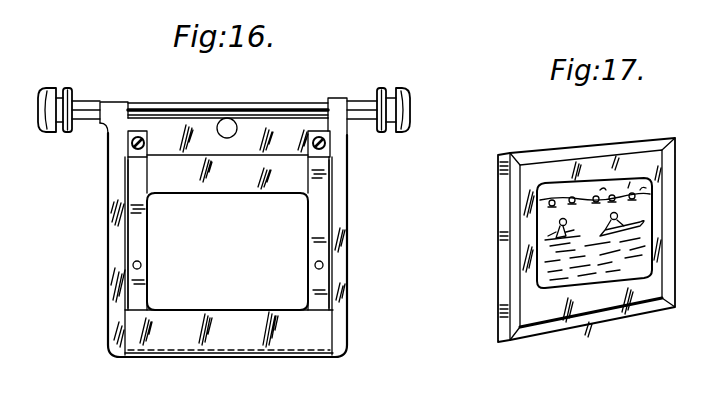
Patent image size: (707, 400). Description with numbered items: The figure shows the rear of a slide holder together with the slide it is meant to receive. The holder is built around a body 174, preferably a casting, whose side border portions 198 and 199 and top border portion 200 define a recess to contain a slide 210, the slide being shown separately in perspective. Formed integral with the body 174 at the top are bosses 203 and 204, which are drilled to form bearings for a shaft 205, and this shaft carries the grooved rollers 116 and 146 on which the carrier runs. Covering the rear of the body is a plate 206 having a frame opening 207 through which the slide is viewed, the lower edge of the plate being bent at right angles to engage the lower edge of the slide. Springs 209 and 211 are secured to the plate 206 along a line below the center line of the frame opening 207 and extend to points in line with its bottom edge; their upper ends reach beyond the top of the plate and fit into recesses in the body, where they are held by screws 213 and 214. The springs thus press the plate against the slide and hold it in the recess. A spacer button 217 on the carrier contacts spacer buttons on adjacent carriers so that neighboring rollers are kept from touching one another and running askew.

In FIG. 16, the grooved roller 116 is at (400, 93).
In FIG. 16, the grooved roller 146 is at (50, 92).
In FIG. 16, the body 174 is at (315, 358).
In FIG. 16, the side border portion 198 is at (340, 199).
In FIG. 16, the side border portion 199 is at (113, 240).
In FIG. 16, the top border portion 200 is at (260, 125).
In FIG. 16, the boss 203 is at (118, 102).
In FIG. 16, the boss 204 is at (340, 101).
In FIG. 16, the shaft 205 is at (233, 107).
In FIG. 16, the plate 206 is at (320, 324).
In FIG. 16, the frame opening 207 is at (202, 302).
In FIG. 16, the spring 209 is at (322, 242).
In FIG. 17, the slide 210 is at (592, 141).
In FIG. 16, the spring 211 is at (135, 196).
In FIG. 16, the screw 213 is at (333, 147).
In FIG. 16, the screw 214 is at (128, 148).
In FIG. 16, the spacer button 217 is at (226, 128).